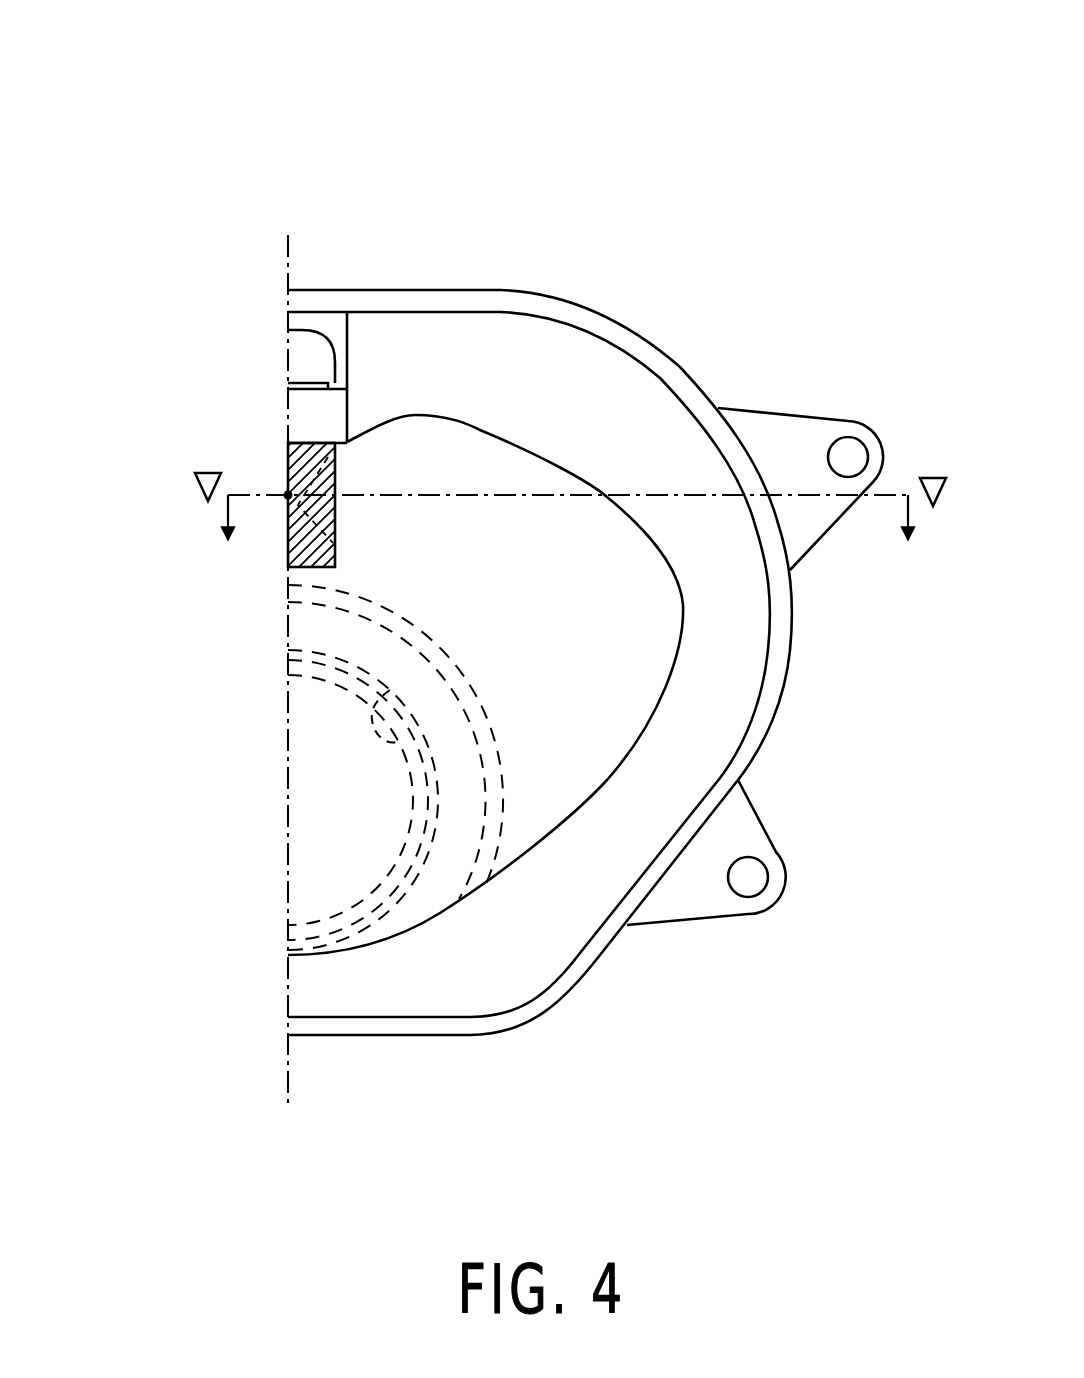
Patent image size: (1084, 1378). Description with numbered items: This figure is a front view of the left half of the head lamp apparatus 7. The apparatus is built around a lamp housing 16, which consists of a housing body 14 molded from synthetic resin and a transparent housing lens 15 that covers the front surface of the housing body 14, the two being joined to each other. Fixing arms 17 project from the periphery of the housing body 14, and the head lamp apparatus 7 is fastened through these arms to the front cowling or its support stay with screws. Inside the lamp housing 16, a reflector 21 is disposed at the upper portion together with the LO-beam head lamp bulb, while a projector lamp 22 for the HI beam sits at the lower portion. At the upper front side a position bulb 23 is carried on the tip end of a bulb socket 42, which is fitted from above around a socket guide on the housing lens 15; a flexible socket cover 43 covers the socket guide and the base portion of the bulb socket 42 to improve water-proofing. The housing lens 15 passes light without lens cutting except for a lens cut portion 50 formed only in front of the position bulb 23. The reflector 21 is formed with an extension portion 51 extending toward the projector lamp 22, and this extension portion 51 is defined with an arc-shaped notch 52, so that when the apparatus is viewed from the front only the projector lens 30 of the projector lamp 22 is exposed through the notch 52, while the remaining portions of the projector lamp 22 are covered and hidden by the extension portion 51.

The head lamp apparatus 7 is at (425, 126).
The housing body 14 is at (470, 286).
The housing lens 15 is at (529, 617).
The lamp housing 16 is at (540, 589).
The fixing arms 17 is at (793, 430).
The reflector 21 is at (603, 634).
The projector lamp 22 is at (282, 767).
The projector lens 30 is at (313, 756).
The position bulb 23 is at (335, 540).
The bulb socket 42 is at (333, 461).
The socket cover 43 is at (310, 332).
The lens cut portion 50 is at (335, 508).
The extension portion 51 is at (432, 898).
The arc-shaped notch 52 is at (405, 743).